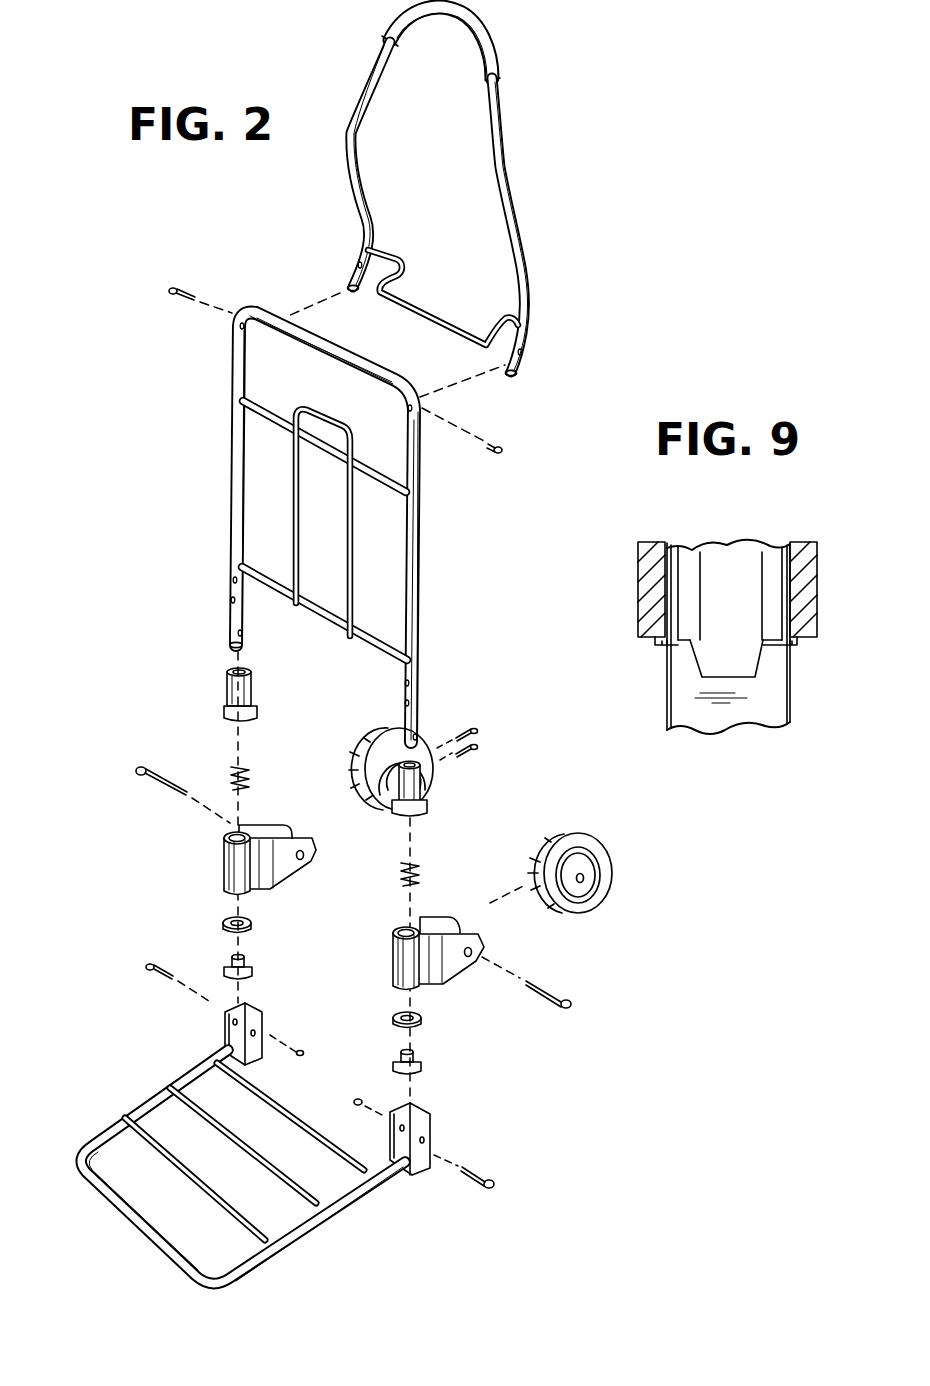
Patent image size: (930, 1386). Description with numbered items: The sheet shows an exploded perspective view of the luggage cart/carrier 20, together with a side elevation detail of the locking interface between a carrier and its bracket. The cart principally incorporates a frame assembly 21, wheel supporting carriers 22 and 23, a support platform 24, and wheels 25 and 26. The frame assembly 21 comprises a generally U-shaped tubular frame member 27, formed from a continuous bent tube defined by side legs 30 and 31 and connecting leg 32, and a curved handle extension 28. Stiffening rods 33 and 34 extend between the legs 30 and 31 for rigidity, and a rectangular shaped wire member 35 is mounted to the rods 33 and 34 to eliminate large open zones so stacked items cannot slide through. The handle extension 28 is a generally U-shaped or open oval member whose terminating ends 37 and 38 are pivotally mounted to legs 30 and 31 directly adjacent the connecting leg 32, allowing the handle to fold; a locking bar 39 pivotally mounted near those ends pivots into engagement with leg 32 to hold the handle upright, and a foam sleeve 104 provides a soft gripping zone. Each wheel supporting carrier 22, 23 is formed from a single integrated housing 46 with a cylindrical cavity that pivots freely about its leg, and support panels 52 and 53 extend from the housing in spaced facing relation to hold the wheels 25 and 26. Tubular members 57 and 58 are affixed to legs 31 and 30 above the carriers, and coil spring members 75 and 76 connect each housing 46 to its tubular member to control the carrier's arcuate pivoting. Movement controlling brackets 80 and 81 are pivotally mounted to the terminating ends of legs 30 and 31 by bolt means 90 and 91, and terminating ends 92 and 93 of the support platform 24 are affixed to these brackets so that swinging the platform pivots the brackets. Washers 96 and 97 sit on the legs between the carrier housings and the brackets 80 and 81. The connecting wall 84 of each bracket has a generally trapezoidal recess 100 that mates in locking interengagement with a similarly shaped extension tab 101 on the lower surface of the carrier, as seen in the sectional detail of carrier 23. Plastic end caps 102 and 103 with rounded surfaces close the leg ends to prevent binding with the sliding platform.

In FIG. 2, the luggage cart/carrier 20 is at (446, 191).
In FIG. 2, the frame assembly 21 is at (327, 527).
In FIG. 2, the wheel supporting carrier 22 is at (455, 966).
In FIG. 2, the wheel supporting carrier 23 is at (347, 866).
In FIG. 9, the wheel supporting carrier 23 is at (726, 629).
In FIG. 2, the support platform 24 is at (288, 1141).
In FIG. 2, the wheel 25 is at (595, 908).
In FIG. 2, the wheel 26 is at (374, 732).
In FIG. 2, the U-shaped tubular frame member 27 is at (285, 527).
In FIG. 2, the handle extension 28 is at (507, 103).
In FIG. 2, the side leg 30 is at (235, 562).
In FIG. 2, the side leg 31 is at (422, 473).
In FIG. 2, the connecting leg 32 is at (375, 367).
In FIG. 2, the stiffening rod 33 is at (283, 410).
In FIG. 2, the stiffening rod 34 is at (395, 652).
In FIG. 2, the rectangular shaped wire member 35 is at (348, 525).
In FIG. 2, the terminating end 37 is at (345, 275).
In FIG. 2, the terminating end 38 is at (517, 362).
In FIG. 2, the locking bar 39 is at (402, 298).
In FIG. 2, the housing 46 is at (224, 880).
In FIG. 2, the support panel 52 is at (275, 825).
In FIG. 2, the support panel 53 is at (292, 863).
In FIG. 2, the tubular member 57 is at (420, 790).
In FIG. 2, the tubular member 58 is at (227, 690).
In FIG. 2, the coil spring member 75 is at (421, 870).
In FIG. 2, the coil spring member 76 is at (231, 766).
In FIG. 2, the movement controlling bracket 80 is at (263, 1028).
In FIG. 2, the movement controlling bracket 81 is at (432, 1143).
In FIG. 9, the connecting wall 84 is at (748, 702).
In FIG. 2, the bolt means 90 is at (155, 795).
In FIG. 2, the bolt means 91 is at (552, 1005).
In FIG. 2, the terminating end 92 is at (238, 1063).
In FIG. 2, the terminating end 93 is at (425, 1160).
In FIG. 2, the washer 96 is at (250, 932).
In FIG. 2, the washer 97 is at (425, 1022).
In FIG. 9, the recess 100 is at (705, 650).
In FIG. 9, the extension tab 101 is at (748, 656).
In FIG. 2, the end cap 102 is at (231, 960).
In FIG. 2, the end cap 103 is at (422, 1073).
In FIG. 2, the foam sleeve 104 is at (440, 25).